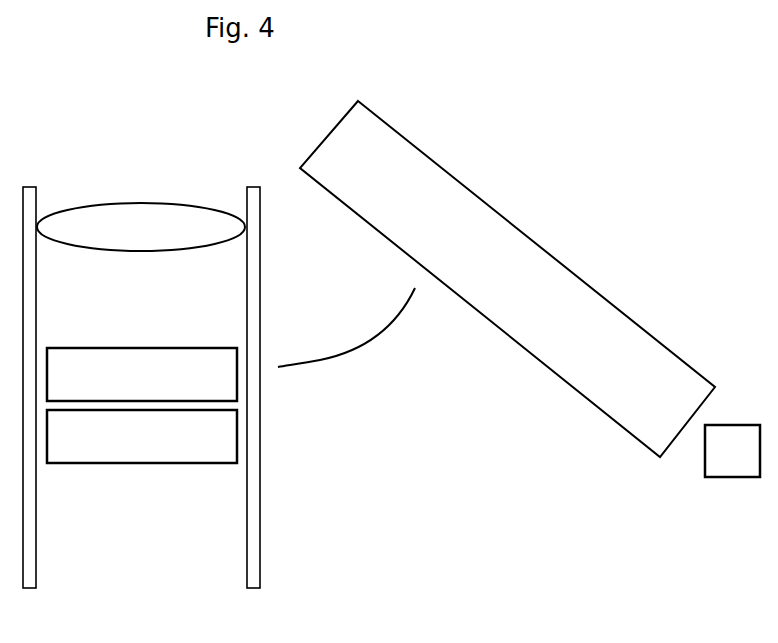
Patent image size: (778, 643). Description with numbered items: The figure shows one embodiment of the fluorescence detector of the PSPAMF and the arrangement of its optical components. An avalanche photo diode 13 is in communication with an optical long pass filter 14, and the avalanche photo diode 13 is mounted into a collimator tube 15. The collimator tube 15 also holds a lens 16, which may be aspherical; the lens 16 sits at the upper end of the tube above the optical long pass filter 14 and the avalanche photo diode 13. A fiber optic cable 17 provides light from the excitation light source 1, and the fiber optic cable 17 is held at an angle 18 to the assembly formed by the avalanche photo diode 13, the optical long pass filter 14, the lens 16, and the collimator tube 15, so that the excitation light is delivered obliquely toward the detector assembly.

The excitation light source 1 is at (732, 451).
The avalanche photo diode 13 is at (142, 436).
The optical long pass filter 14 is at (142, 374).
The collimator tube 15 is at (253, 507).
The lens 16 is at (141, 227).
The fiber optic cable 17 is at (507, 279).
The angle 18 is at (346, 336).